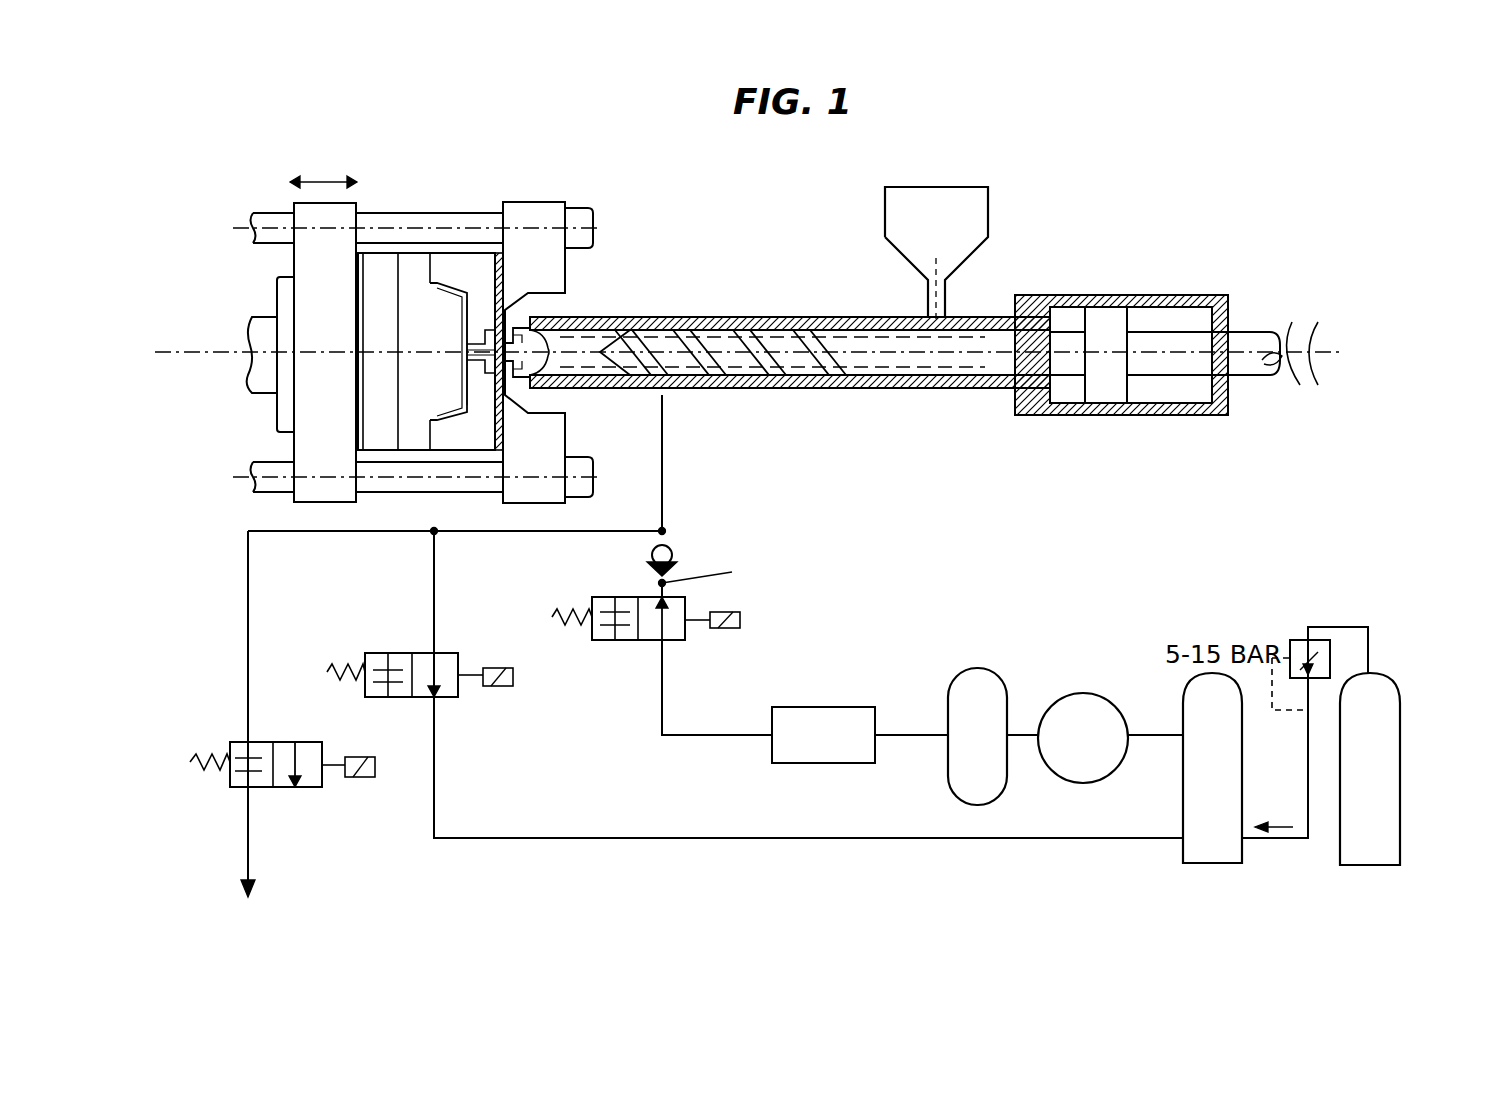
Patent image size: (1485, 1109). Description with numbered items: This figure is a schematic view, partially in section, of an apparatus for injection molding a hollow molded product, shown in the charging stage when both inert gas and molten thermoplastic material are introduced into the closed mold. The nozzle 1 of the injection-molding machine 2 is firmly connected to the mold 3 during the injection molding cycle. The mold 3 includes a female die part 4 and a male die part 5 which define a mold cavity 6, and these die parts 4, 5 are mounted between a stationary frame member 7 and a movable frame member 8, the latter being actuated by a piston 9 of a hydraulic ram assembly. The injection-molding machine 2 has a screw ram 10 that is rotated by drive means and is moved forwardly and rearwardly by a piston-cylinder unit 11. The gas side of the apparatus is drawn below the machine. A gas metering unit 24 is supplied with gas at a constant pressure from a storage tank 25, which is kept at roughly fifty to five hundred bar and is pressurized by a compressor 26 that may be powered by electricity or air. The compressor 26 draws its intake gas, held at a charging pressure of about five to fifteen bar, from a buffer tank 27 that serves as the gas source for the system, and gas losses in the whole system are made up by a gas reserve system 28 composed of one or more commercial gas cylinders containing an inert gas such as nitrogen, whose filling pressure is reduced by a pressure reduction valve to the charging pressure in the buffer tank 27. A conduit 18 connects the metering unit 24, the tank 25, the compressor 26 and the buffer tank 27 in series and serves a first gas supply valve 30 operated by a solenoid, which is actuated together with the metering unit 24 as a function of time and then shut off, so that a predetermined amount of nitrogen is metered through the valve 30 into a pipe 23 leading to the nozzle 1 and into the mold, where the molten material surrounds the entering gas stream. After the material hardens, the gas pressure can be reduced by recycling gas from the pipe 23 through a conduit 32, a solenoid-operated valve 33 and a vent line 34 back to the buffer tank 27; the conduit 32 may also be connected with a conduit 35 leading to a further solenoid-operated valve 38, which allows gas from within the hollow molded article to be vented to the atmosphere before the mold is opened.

The nozzle 1 is at (550, 340).
The injection-molding machine 2 is at (1020, 226).
The mold 3 is at (497, 192).
The female die part 4 is at (448, 272).
The male die part 5 is at (410, 276).
The mold cavity 6 is at (451, 415).
The stationary frame member 7 is at (566, 205).
The movable frame member 8 is at (312, 212).
The piston 9 is at (264, 396).
The screw ram 10 is at (1240, 330).
The piston-cylinder unit 11 is at (1157, 304).
The conduit 18 is at (672, 737).
The pipe 23 is at (663, 480).
The gas metering unit 24 is at (822, 706).
The storage tank 25 is at (985, 668).
The compressor 26 is at (1100, 695).
The buffer tank 27 is at (1243, 755).
The gas reserve system 28 is at (1401, 755).
The first gas supply valve 30 is at (670, 641).
The conduit 32 is at (514, 534).
The solenoid-operated valve 33 is at (447, 699).
The vent line 34 is at (600, 840).
The conduit 35 is at (249, 660).
The solenoid-operated valve 38 is at (283, 789).